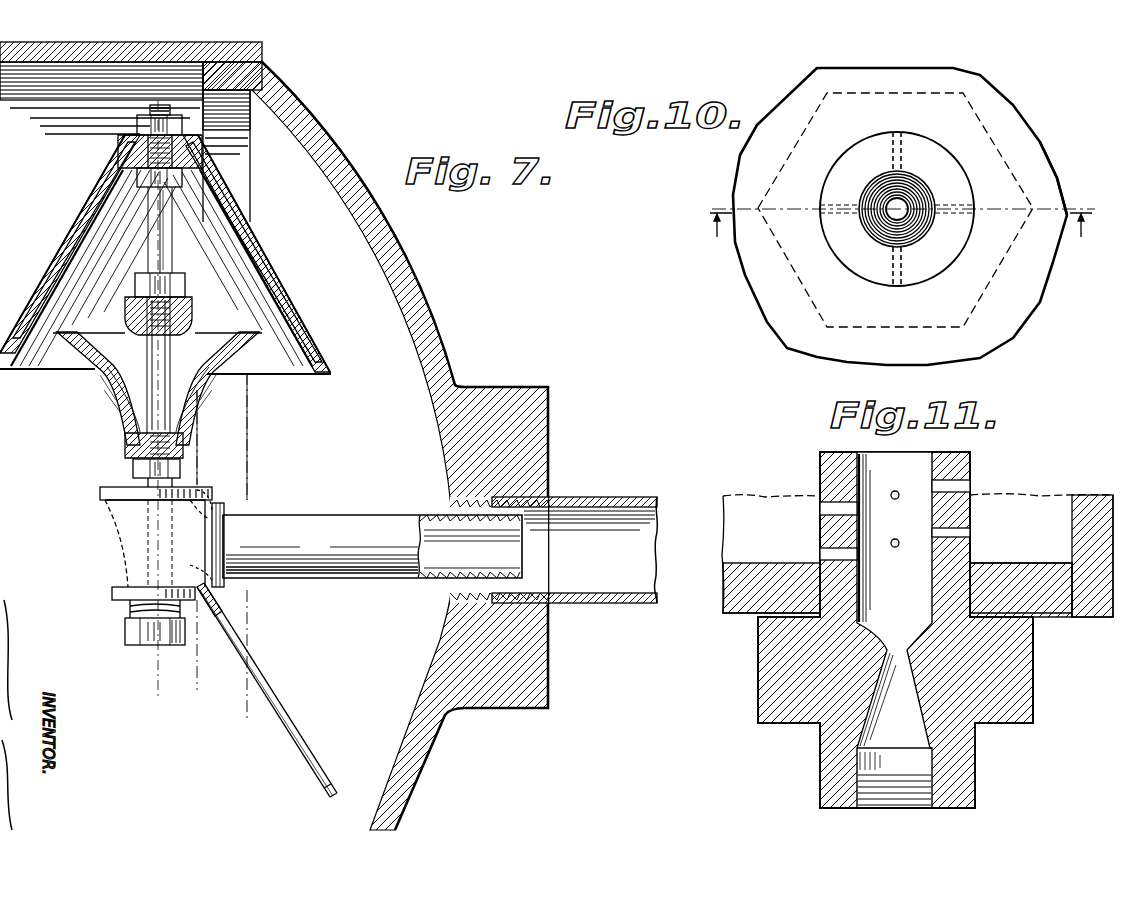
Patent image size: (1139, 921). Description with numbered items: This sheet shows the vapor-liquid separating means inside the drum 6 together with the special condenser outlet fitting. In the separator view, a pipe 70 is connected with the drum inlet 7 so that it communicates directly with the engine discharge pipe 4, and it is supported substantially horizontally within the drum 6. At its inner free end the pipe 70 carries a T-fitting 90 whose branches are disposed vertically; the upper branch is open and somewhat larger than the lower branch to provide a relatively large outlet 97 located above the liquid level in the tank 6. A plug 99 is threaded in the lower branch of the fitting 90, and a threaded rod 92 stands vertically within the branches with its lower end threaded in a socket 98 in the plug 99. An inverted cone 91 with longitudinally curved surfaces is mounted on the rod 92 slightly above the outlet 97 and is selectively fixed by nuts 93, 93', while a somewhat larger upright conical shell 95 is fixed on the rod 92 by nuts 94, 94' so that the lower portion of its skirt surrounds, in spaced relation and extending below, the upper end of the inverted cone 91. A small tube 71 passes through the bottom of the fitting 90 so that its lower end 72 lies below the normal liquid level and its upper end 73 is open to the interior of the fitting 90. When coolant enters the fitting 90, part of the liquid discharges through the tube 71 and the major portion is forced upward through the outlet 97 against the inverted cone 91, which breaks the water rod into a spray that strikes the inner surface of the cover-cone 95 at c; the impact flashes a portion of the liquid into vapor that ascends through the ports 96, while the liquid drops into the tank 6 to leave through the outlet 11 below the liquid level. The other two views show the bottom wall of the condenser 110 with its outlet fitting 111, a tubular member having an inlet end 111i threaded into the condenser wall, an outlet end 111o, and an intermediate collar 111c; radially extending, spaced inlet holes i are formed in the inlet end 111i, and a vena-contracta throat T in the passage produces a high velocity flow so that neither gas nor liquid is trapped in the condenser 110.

In FIG. 7, the engine discharge pipe 4 is at (600, 498).
In FIG. 7, the drum 6 is at (421, 272).
In FIG. 7, the drum inlet 7 is at (548, 494).
In FIG. 7, the pipe 70 is at (226, 512).
In FIG. 7, the small tube 71 is at (268, 692).
In FIG. 7, the lower end of tube 72 is at (332, 797).
In FIG. 7, the upper end of tube 73 is at (198, 567).
In FIG. 7, the T-fitting 90 is at (110, 528).
In FIG. 7, the inverted cone 91 is at (100, 380).
In FIG. 7, the threaded rod 92 is at (152, 398).
In FIG. 7, the nut 93 is at (182, 275).
In FIG. 7, the nut 93' is at (134, 471).
In FIG. 7, the nut 94 is at (126, 132).
In FIG. 7, the nut 94' is at (175, 182).
In FIG. 7, the conical shell 95 is at (60, 238).
In FIG. 7, the ports 96 is at (108, 173).
In FIG. 7, the outlet 97 is at (175, 487).
In FIG. 7, the socket 98 is at (150, 623).
In FIG. 7, the plug 99 is at (178, 646).
In FIG. 7, the contact point c is at (50, 312).
In FIG. 10, the condenser 110 is at (750, 270).
In FIG. 11, the condenser 110 is at (764, 565).
In FIG. 10, the outlet fitting 111 is at (990, 245).
In FIG. 11, the outlet fitting 111 is at (758, 657).
In FIG. 10, the collar 111c is at (995, 152).
In FIG. 11, the collar 111c is at (1033, 665).
In FIG. 10, the inlet end 111i is at (878, 178).
In FIG. 11, the inlet end 111i is at (975, 457).
In FIG. 11, the outlet end 111o is at (820, 775).
In FIG. 10, the inlet holes i is at (905, 152).
In FIG. 11, the inlet holes i is at (850, 556).
In FIG. 10, the vena-contracta throat T is at (912, 199).
In FIG. 11, the vena-contracta throat T is at (903, 636).
In FIG. 10, the outlet 11 is at (901, 213).